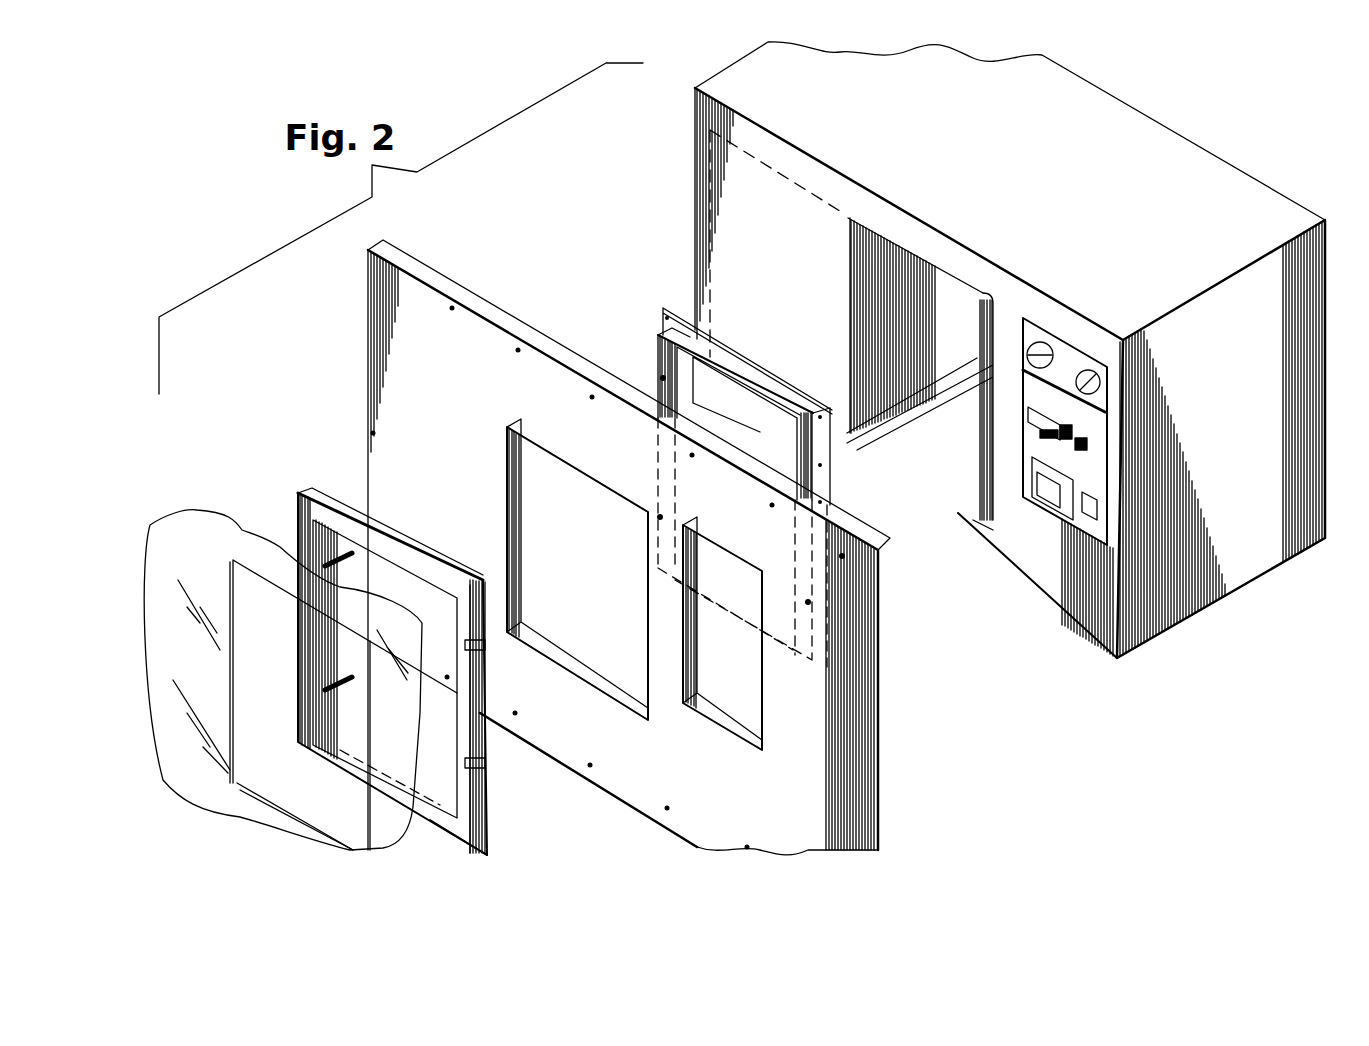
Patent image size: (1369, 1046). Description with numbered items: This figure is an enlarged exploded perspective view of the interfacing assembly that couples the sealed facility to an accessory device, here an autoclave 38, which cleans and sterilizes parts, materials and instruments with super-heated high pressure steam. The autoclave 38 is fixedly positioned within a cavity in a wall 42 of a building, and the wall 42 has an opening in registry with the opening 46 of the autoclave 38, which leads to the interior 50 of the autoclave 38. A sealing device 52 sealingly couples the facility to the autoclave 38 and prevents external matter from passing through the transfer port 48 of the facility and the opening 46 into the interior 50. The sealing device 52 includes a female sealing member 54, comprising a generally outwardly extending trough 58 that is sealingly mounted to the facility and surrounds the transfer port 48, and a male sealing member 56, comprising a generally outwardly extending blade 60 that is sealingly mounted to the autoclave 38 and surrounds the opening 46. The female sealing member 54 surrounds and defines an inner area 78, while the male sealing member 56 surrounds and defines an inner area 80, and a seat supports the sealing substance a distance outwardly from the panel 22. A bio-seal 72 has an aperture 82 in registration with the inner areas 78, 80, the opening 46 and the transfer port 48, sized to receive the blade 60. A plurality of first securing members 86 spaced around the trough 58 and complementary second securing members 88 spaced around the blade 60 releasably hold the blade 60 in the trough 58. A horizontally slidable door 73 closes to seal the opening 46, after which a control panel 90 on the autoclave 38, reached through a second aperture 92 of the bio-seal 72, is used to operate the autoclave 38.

The panel 22 is at (181, 778).
The autoclave 38 is at (1203, 445).
The wall 42 is at (310, 837).
The opening 46 is at (960, 516).
The transfer port 48 is at (238, 790).
The interior 50 is at (948, 312).
The sealing device 52 is at (1023, 797).
The female sealing member 54 is at (473, 840).
The male sealing member 56 is at (697, 325).
The trough 58 is at (306, 537).
The blade 60 is at (660, 333).
The bio-seal 72 is at (410, 380).
The door 73 is at (847, 325).
The inner area 78 is at (435, 770).
The inner area 80 is at (755, 448).
The aperture 82 is at (580, 628).
The first securing members 86 is at (325, 577).
The second securing members 88 is at (663, 378).
The control panel 90 is at (1097, 477).
The aperture 92 is at (765, 740).